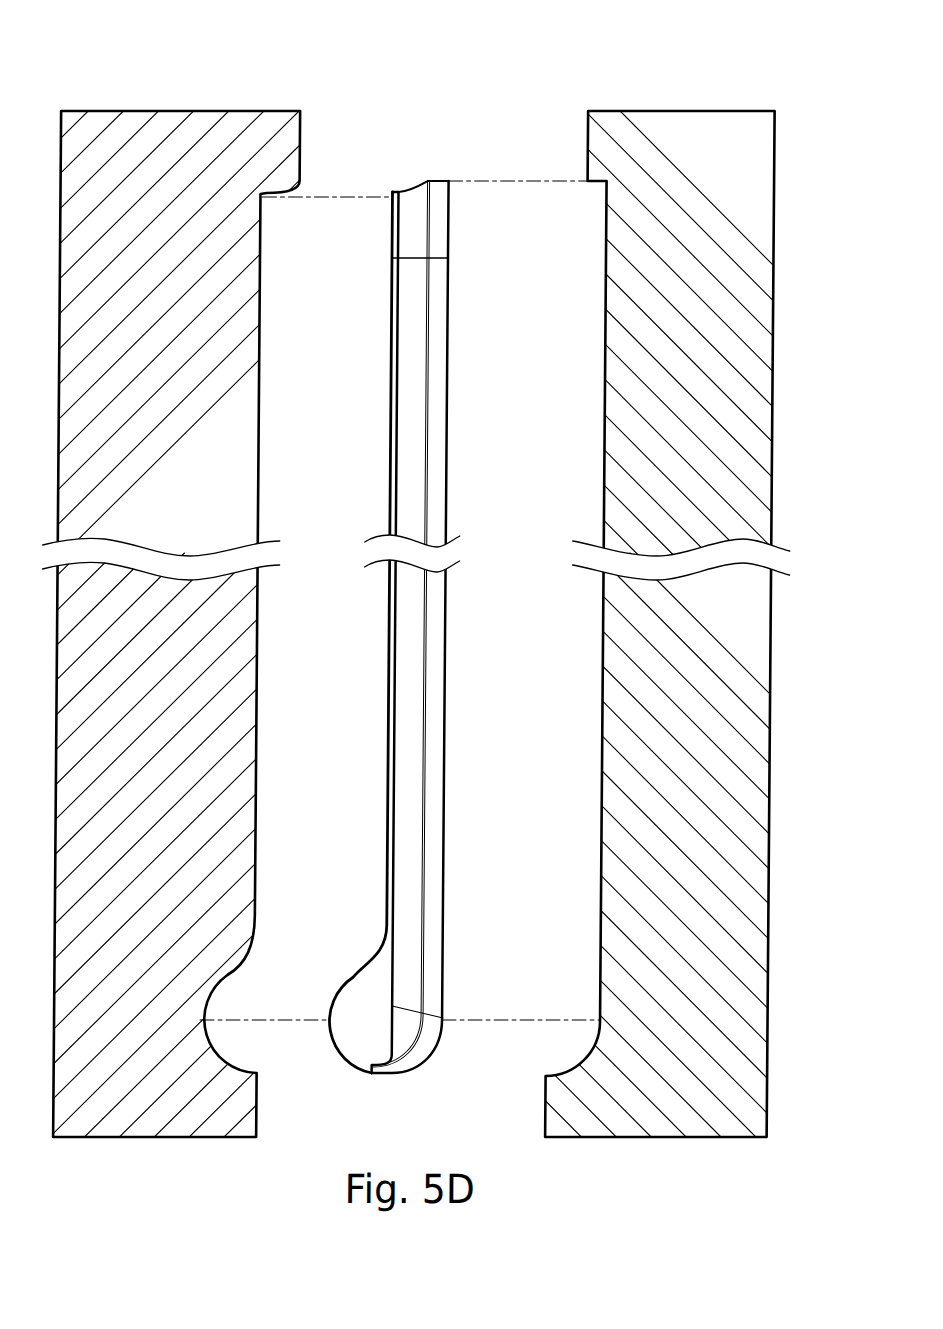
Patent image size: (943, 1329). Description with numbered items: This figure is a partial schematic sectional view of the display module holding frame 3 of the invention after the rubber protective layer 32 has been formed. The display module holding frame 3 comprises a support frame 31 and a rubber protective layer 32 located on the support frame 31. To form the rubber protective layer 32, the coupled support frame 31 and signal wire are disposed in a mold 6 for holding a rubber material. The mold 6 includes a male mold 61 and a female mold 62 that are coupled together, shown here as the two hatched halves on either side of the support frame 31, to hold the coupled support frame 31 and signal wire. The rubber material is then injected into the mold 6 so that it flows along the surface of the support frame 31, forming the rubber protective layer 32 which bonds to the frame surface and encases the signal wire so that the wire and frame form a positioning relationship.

The mold 6 is at (471, 568).
The male mold 61 is at (273, 133).
The female mold 62 is at (263, 37).
The display module holding frame 3 is at (439, 627).
The support frame 31 is at (451, 806).
The rubber protective layer 32 is at (518, 817).